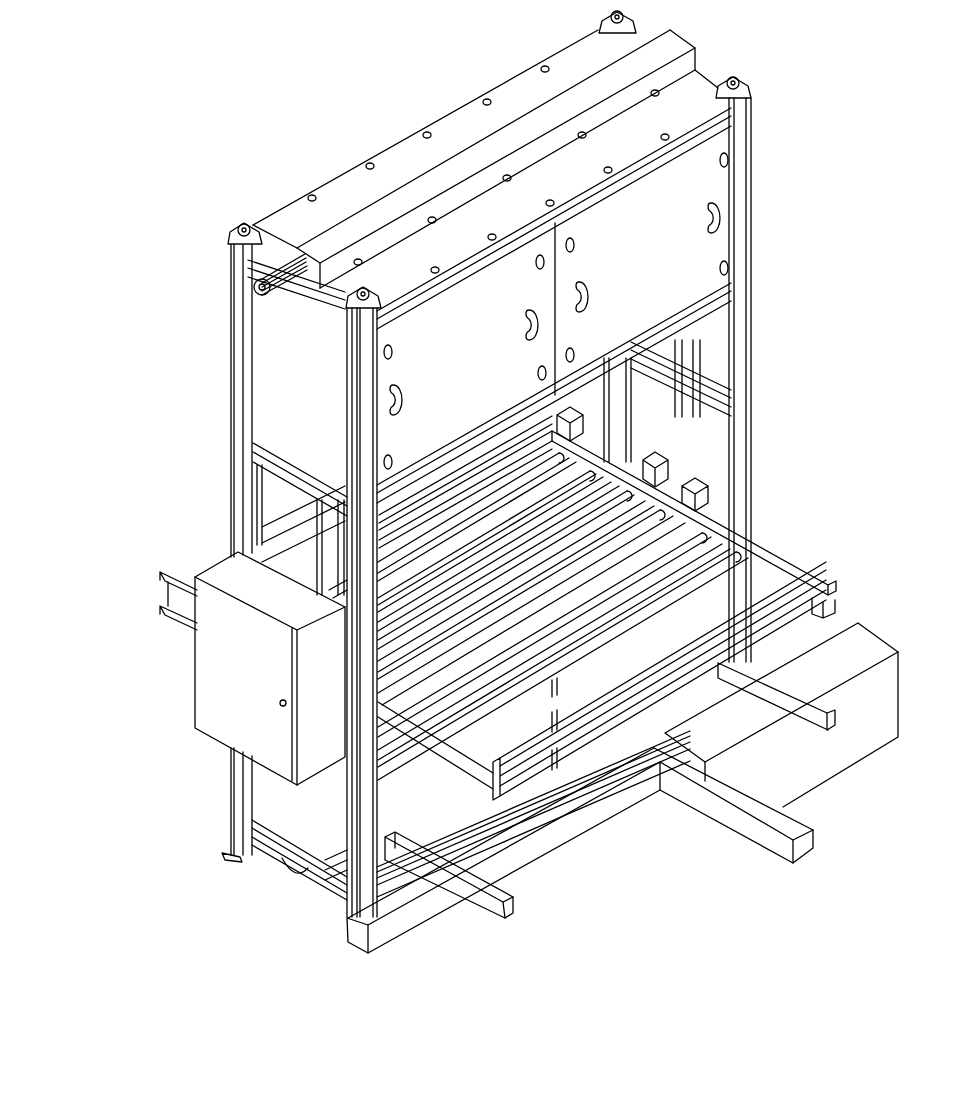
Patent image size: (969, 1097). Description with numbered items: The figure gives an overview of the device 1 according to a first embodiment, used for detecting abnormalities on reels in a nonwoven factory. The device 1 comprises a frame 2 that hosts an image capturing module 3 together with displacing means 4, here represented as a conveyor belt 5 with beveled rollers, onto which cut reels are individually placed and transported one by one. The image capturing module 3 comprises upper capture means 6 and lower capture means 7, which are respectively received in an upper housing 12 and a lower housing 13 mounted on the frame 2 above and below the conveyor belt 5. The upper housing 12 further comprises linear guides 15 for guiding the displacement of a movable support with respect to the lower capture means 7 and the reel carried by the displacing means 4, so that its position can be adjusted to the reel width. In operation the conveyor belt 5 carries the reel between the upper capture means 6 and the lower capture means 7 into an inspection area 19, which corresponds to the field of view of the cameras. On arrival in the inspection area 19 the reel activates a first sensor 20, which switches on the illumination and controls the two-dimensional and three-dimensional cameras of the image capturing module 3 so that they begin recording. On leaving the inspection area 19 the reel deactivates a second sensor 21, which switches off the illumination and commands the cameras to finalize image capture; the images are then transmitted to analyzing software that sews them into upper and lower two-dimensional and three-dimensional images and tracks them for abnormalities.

The device 1 is at (258, 107).
The frame 2 is at (177, 630).
The image capturing module 3 is at (688, 190).
The displacing means 4 is at (785, 550).
The conveyor belt 5 is at (830, 585).
The upper capture means 6 is at (705, 270).
The lower capture means 7 is at (295, 812).
The upper housing 12 is at (288, 360).
The lower housing 13 is at (290, 833).
The linear guides 15 is at (322, 517).
The inspection area 19 is at (605, 447).
The first sensor 20 is at (697, 490).
The second sensor 21 is at (585, 422).